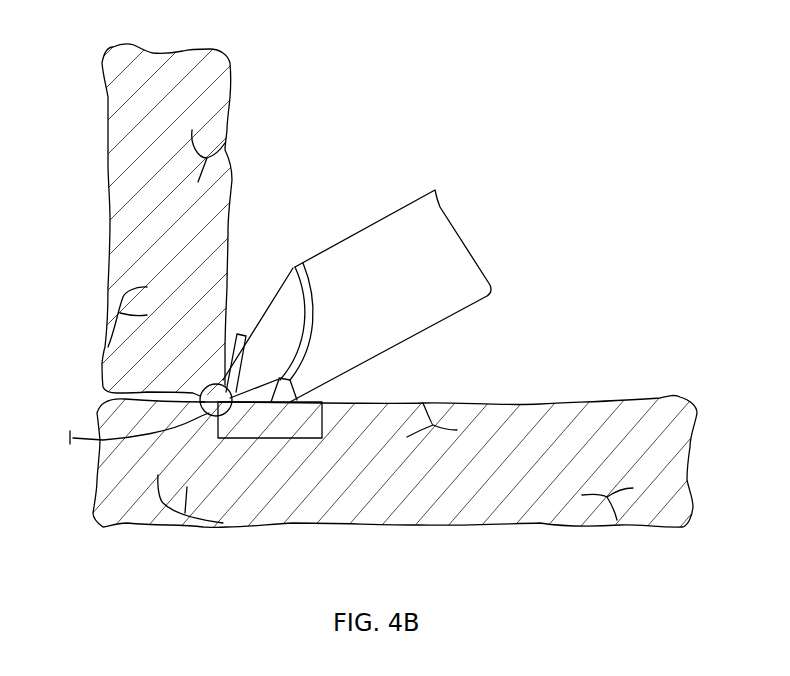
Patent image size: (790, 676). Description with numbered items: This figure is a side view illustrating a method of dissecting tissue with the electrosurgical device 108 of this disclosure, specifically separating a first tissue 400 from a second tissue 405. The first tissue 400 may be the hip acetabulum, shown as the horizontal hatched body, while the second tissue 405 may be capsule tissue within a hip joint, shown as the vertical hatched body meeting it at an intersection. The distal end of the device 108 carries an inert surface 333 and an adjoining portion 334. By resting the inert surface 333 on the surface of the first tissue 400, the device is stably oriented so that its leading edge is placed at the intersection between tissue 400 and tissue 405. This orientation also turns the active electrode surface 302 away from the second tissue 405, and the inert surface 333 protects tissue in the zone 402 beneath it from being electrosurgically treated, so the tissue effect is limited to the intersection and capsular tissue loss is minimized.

The cleaning tool 108 is at (404, 235).
The active electrode surface 302 is at (224, 385).
The inert surface 333 is at (277, 379).
The flexible blade 334 is at (281, 272).
The first tissue 400 is at (527, 487).
The zone 402 is at (293, 423).
The second tissue 405 is at (120, 200).